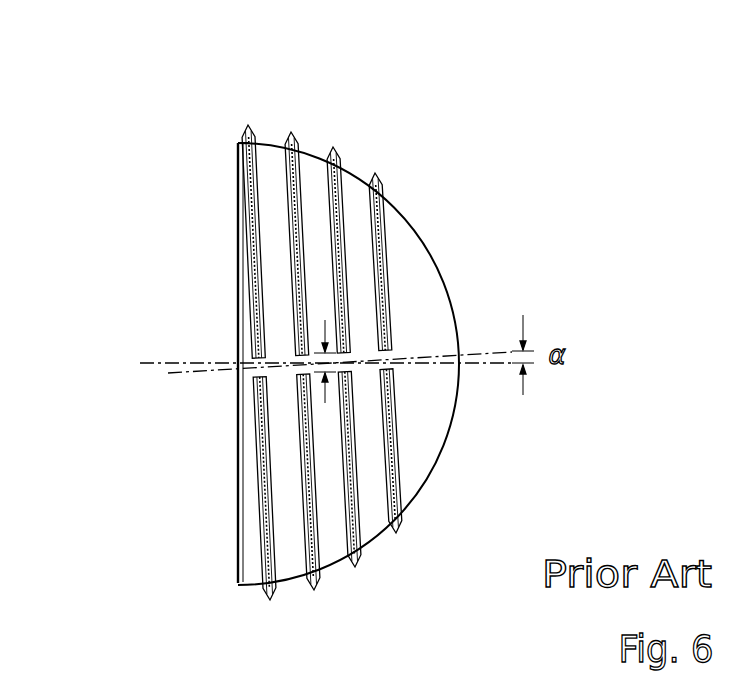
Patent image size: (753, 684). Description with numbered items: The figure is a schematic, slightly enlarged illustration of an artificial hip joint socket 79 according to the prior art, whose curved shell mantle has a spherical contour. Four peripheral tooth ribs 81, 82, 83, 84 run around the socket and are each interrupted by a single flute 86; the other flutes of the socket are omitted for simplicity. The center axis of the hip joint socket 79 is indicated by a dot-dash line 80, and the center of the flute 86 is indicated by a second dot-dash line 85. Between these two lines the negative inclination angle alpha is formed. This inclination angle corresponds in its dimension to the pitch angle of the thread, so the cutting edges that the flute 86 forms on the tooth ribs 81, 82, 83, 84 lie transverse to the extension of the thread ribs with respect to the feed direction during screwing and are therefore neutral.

The artificial hip joint socket 79 is at (421, 448).
The dot-dash line indicating center axis 80 is at (307, 363).
The peripheral tooth rib 81 is at (248, 118).
The peripheral tooth rib 82 is at (291, 124).
The peripheral tooth rib 83 is at (333, 140).
The peripheral tooth rib 84 is at (375, 165).
The dot-dash line indicating center of flute 85 is at (334, 379).
The flute 86 is at (327, 381).